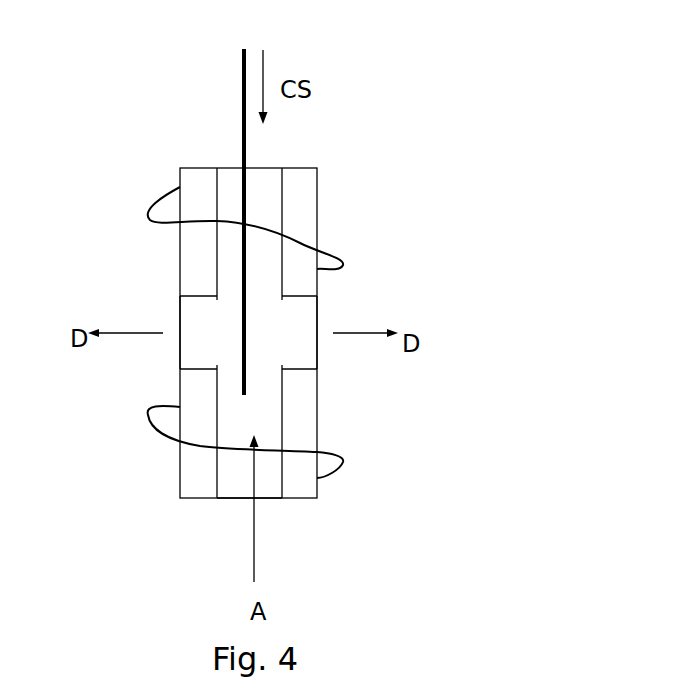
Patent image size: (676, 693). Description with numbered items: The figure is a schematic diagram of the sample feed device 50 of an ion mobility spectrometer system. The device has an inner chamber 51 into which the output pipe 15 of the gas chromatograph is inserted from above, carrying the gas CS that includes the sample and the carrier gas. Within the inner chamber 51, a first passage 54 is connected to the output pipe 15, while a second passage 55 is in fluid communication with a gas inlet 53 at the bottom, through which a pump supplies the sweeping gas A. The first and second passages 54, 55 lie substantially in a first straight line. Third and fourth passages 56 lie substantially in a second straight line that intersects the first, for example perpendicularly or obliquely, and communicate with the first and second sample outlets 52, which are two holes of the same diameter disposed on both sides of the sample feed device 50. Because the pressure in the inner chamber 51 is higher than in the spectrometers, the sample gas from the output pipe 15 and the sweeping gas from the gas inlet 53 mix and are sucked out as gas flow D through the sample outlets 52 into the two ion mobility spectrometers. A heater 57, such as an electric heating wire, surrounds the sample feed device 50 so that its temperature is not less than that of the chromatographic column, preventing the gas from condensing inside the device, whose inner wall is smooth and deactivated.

The output pipe 15 is at (243, 145).
The sample feed device 50 is at (363, 168).
The inner chamber 51 is at (253, 332).
The first and second sample outlets 52 is at (182, 333).
The gas inlet 53 is at (265, 498).
The first passage 54 is at (228, 277).
The second passage 55 is at (228, 480).
The third and fourth passages 56 is at (202, 320).
The heater 57 is at (343, 450).